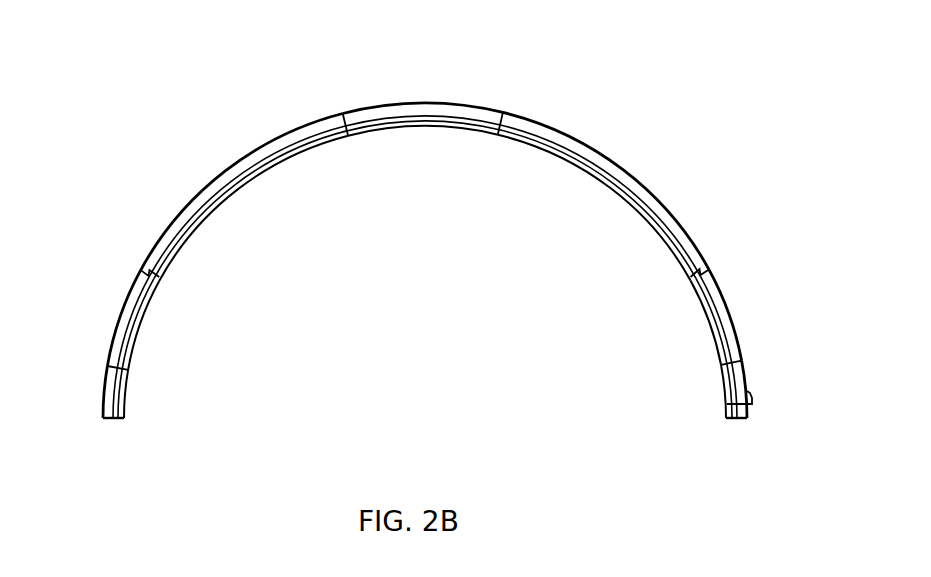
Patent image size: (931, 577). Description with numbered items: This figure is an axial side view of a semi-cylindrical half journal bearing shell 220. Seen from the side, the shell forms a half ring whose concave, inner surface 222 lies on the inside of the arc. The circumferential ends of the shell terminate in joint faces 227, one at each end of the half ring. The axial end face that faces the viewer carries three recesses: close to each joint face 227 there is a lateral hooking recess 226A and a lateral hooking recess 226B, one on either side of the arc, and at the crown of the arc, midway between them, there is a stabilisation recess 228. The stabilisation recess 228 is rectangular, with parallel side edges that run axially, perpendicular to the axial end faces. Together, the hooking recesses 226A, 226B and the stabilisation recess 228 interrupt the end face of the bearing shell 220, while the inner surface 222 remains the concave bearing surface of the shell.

The semi-cylindrical half journal bearing shell 220 is at (655, 102).
The concave, inner surface 222 is at (576, 160).
The lateral hooking recess 226A is at (122, 320).
The lateral hooking recess 226B is at (717, 300).
The joint face 227 is at (108, 420).
The stabilisation recess 228 is at (483, 110).